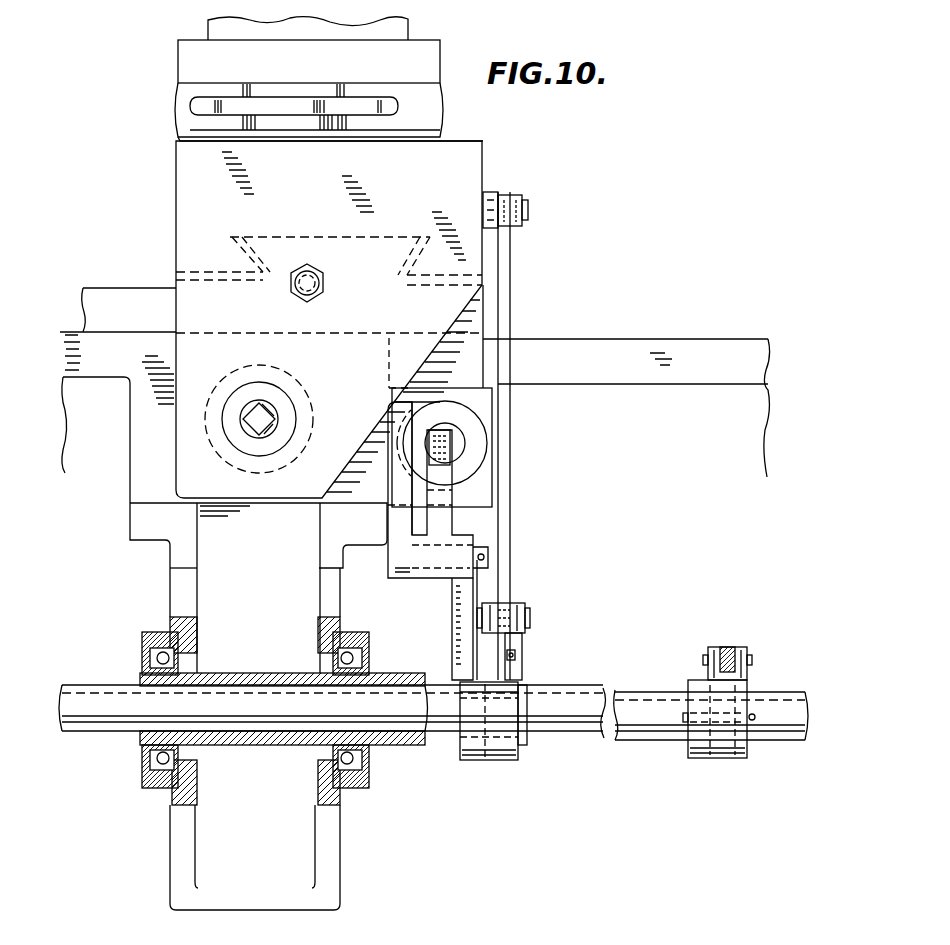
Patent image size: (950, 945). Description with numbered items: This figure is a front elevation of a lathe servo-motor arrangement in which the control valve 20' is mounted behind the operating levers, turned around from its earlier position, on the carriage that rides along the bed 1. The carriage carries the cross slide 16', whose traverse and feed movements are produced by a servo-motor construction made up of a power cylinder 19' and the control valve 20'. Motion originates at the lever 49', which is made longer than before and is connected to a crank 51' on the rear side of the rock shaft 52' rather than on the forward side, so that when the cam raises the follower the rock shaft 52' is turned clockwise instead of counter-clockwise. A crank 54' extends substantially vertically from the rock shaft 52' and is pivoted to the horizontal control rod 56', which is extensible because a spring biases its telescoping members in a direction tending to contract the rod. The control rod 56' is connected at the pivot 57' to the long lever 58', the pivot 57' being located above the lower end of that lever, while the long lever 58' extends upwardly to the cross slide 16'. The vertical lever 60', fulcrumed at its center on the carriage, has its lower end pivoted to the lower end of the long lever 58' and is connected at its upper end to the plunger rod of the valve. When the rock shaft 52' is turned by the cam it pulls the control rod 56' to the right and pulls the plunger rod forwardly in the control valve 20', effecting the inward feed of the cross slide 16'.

The bed 1 is at (770, 409).
The cross slide 16' is at (301, 328).
The power cylinder 19' is at (273, 411).
The control valve 20' is at (479, 447).
The long lever 58' is at (531, 436).
The control rod 56' is at (518, 604).
The pivot 57' is at (532, 613).
The crank 54' is at (519, 696).
The vertical lever 60' is at (430, 541).
The rock shaft 52' is at (433, 725).
The crank 51' is at (719, 739).
The lever 49' is at (727, 640).